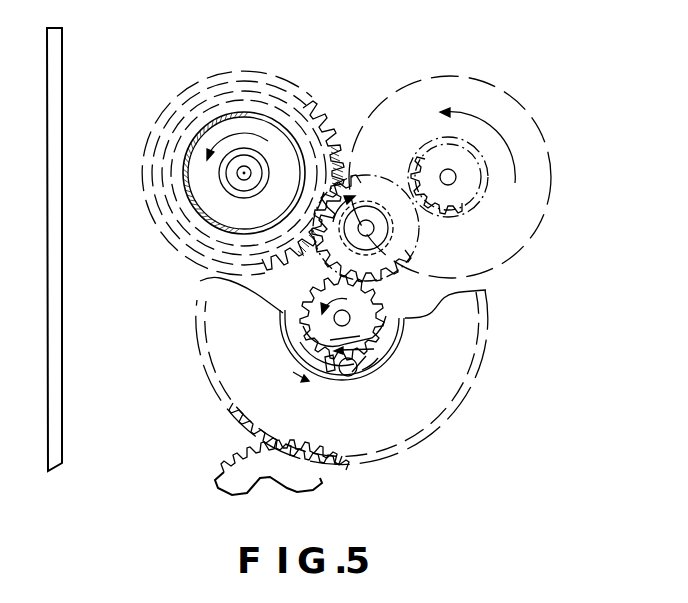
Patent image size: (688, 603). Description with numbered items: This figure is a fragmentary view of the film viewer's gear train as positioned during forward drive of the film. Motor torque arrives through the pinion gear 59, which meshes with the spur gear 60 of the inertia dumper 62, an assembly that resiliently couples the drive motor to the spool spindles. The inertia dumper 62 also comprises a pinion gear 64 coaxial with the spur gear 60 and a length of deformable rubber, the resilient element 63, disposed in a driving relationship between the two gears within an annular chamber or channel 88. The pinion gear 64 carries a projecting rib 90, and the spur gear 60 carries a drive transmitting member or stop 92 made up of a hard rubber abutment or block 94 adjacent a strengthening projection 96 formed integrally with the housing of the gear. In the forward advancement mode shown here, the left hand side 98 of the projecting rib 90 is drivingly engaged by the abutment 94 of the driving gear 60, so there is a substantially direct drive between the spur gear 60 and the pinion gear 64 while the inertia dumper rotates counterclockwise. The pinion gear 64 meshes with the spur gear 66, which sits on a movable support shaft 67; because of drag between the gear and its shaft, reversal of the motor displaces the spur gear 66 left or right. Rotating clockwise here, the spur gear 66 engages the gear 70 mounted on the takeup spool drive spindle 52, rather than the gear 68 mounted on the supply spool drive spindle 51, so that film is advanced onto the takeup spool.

The gear 70 is at (202, 90).
The takeup spool drive spindle 52 is at (247, 170).
The spur gear 66 is at (333, 262).
The movable support shaft 67 is at (366, 236).
The gear 68 is at (448, 190).
The supply spool drive spindle 51 is at (455, 180).
The pinion gear 64 is at (303, 314).
The deformable resilient element 63 is at (300, 342).
The annular chamber or channel 88 is at (384, 312).
The drive transmitting member or stop 92 is at (374, 349).
The projecting rib 90 is at (363, 366).
The left hand side of the projecting rib 98 is at (376, 378).
The hard rubber abutment or block 94 is at (348, 378).
The strengthening projection 96 is at (333, 368).
The spur gear 60 is at (462, 393).
The inertia dumper 62 is at (492, 352).
The pinion gear 59 is at (261, 467).